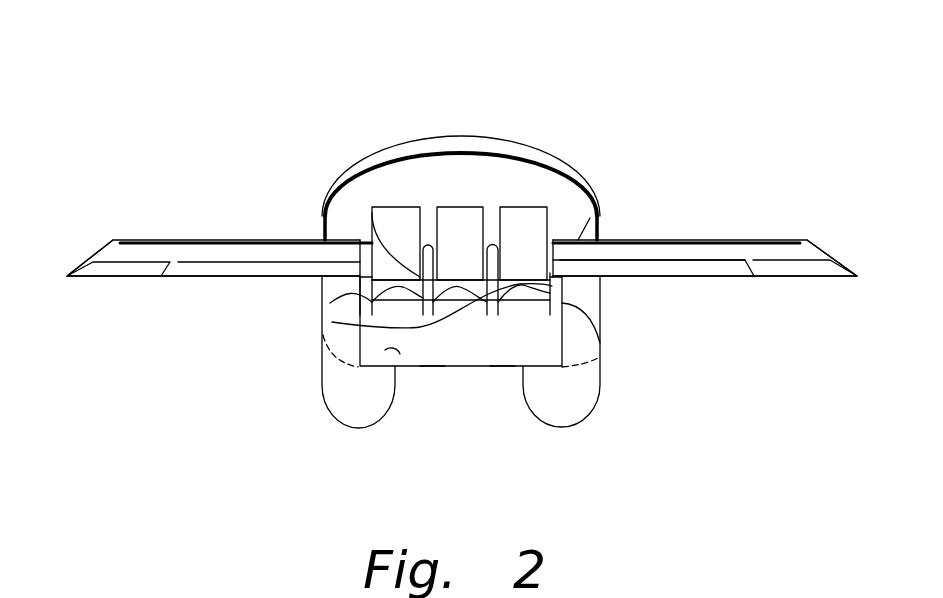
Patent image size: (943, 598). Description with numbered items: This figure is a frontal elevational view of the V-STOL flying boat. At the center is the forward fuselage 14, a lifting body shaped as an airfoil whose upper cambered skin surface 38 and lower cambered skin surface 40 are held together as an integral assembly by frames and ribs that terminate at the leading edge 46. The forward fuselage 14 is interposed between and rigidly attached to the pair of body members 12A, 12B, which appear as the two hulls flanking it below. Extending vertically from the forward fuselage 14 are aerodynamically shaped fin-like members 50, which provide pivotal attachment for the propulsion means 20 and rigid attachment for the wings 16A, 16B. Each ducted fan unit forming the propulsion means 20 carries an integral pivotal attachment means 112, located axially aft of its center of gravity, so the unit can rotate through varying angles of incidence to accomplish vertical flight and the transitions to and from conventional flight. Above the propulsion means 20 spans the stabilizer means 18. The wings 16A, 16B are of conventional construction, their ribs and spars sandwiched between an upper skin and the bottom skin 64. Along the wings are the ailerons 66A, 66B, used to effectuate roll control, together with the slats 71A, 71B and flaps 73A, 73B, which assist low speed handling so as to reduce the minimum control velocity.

The body member 12A is at (330, 407).
The body member 12B is at (602, 390).
The forward fuselage 14 is at (460, 366).
The wing 16A is at (177, 262).
The wing 16B is at (745, 262).
The stabilizer means 18 is at (371, 149).
The propulsion means 20 is at (397, 207).
The upper cambered skin surface 38 is at (385, 350).
The lower cambered skin surface 40 is at (502, 366).
The leading edge 46 is at (432, 366).
The fin-like member 50 is at (332, 322).
The bottom skin 64 is at (678, 252).
The aileron 66A is at (100, 277).
The aileron 66B is at (810, 277).
The slat 71A is at (170, 240).
The slat 71B is at (727, 240).
The flap 73A is at (210, 277).
The flap 73B is at (637, 277).
The pivotal attachment means 112 is at (372, 213).